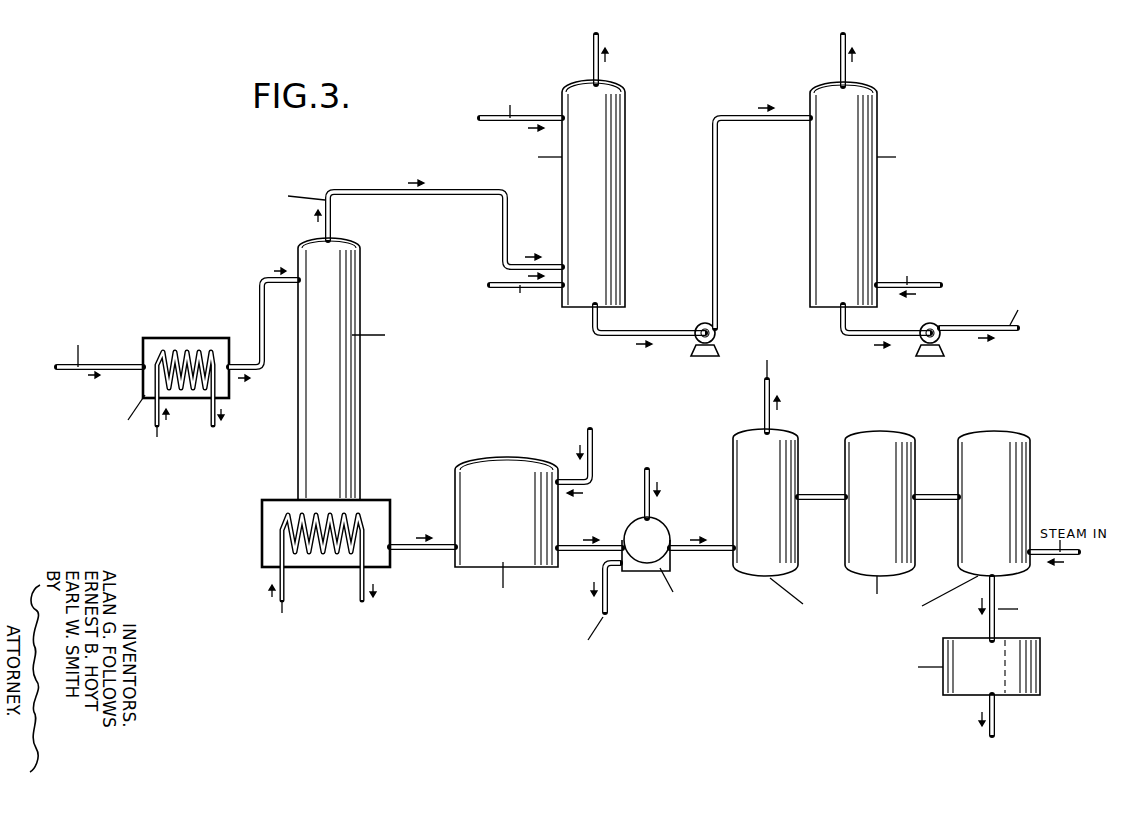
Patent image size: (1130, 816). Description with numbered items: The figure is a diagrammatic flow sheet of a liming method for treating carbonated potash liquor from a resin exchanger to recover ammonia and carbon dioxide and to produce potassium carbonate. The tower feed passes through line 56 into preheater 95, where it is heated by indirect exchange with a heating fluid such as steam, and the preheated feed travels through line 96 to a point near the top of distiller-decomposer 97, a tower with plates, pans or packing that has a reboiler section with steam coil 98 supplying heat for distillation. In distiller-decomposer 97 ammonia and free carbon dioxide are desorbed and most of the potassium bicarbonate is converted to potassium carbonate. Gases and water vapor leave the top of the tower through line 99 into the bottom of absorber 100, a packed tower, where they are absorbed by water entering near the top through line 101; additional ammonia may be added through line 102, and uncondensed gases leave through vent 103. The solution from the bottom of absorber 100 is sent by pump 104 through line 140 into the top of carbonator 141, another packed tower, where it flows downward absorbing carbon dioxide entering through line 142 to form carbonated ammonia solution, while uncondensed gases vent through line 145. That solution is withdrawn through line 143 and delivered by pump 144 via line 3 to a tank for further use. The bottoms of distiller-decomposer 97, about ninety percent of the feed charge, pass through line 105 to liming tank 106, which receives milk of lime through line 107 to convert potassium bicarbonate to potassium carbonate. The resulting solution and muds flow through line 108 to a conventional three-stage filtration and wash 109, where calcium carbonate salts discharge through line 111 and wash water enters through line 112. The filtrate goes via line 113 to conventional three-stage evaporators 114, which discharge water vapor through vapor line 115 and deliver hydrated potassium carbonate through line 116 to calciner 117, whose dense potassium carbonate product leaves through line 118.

The line 3 is at (1016, 332).
The line 56 is at (62, 367).
The preheater 95 is at (193, 345).
The line 96 is at (262, 318).
The distiller-decomposer 97 is at (357, 381).
The steam coil 98 is at (318, 555).
The line 99 is at (420, 192).
The absorber 100 is at (625, 168).
The line 101 is at (480, 118).
The line 102 is at (490, 285).
The vent 103 is at (594, 55).
The pump 104 is at (699, 326).
The line 105 is at (425, 550).
The liming tank 106 is at (505, 460).
The line 107 is at (592, 482).
The line 108 is at (576, 552).
The 3-stage filtration and wash 109 is at (660, 530).
The line 111 is at (601, 608).
The line 112 is at (652, 474).
The line 113 is at (705, 552).
The 3-stage evaporators 114 is at (798, 537).
The vapor line 115 is at (765, 400).
The line 116 is at (998, 588).
The calciner 117 is at (1040, 667).
The line 118 is at (995, 716).
The line 140 is at (715, 191).
The carbonator 141 is at (877, 190).
The line 142 is at (938, 283).
The line 143 is at (853, 337).
The pump 144 is at (932, 356).
The line 145 is at (841, 55).